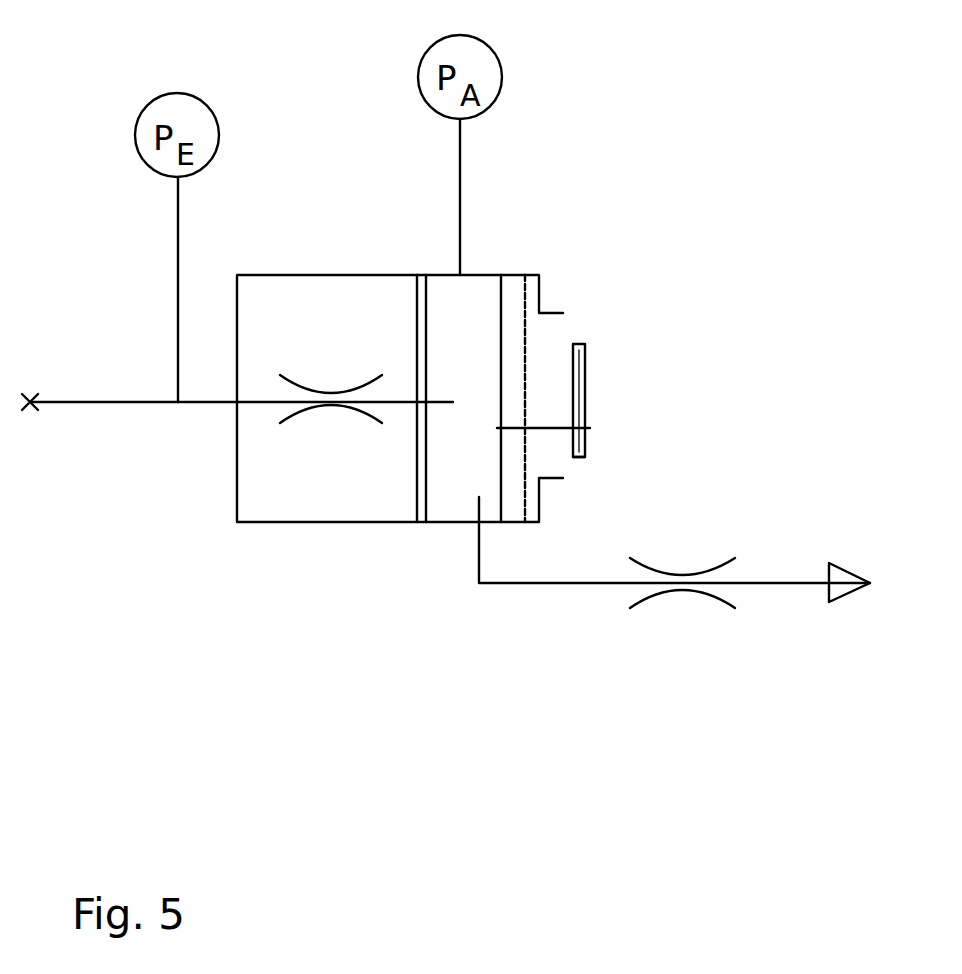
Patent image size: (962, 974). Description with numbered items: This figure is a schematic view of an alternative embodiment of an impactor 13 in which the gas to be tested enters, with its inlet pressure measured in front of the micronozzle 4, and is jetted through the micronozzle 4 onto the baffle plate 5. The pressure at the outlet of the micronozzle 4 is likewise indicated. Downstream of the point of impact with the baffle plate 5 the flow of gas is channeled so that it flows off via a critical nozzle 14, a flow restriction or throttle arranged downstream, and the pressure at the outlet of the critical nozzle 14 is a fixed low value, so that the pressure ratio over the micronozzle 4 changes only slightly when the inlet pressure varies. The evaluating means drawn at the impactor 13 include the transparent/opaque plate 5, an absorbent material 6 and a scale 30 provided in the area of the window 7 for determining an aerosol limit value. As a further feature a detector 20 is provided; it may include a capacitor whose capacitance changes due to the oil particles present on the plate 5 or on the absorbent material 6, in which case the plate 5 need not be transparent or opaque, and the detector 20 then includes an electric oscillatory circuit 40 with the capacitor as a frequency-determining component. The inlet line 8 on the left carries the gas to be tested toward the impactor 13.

The micronozzle 4 is at (331, 393).
The baffle plate 5 is at (512, 340).
The absorbent material 6 is at (564, 430).
The window 7 is at (553, 388).
The inlet line 8 is at (135, 402).
The impactor 13 is at (245, 577).
The critical nozzle 14 is at (682, 575).
The detector 20 is at (583, 459).
The scale 30 is at (528, 367).
The electric oscillatory circuit 40 is at (588, 387).